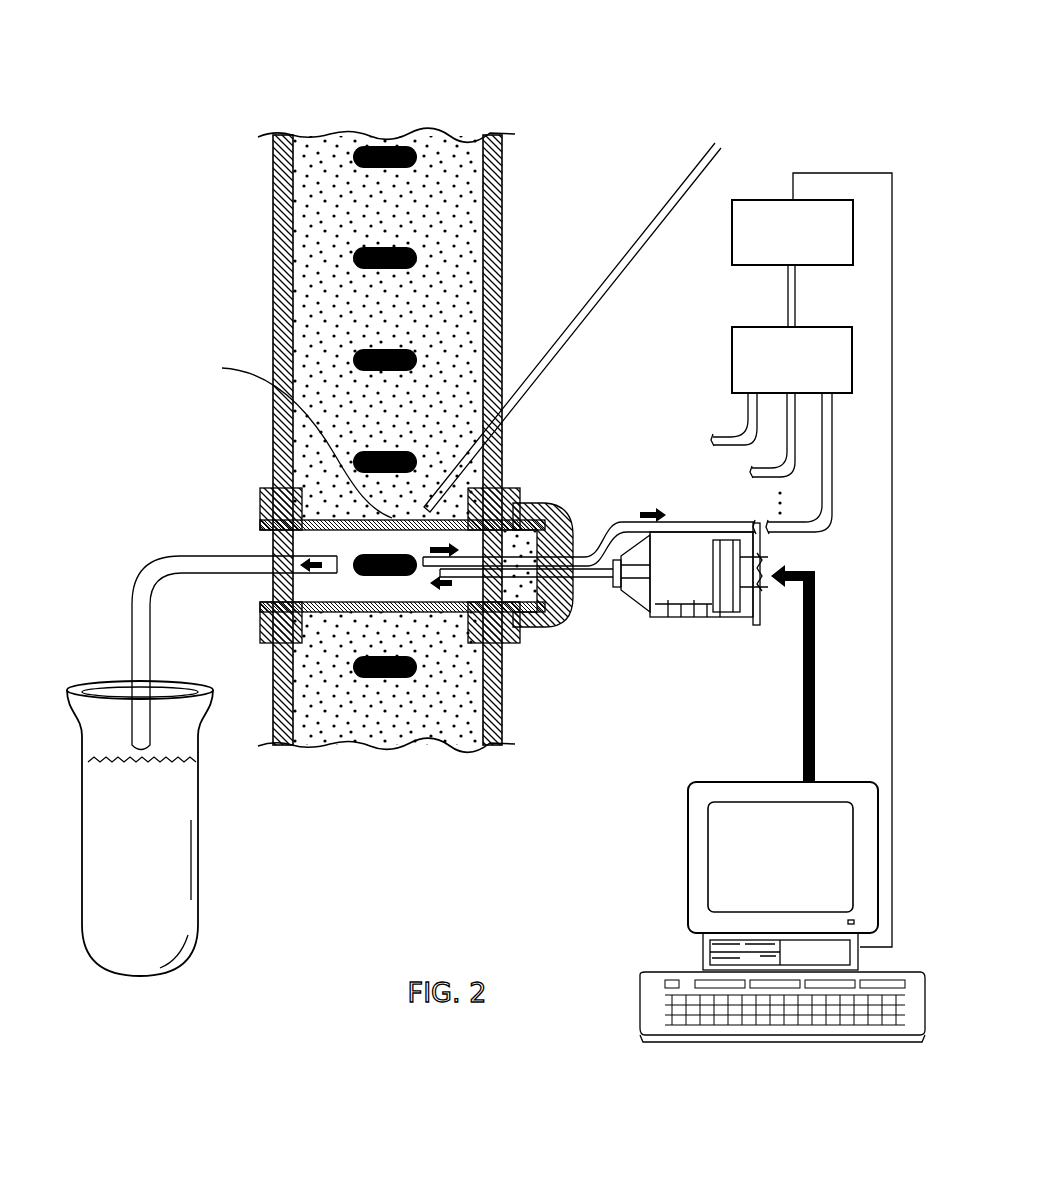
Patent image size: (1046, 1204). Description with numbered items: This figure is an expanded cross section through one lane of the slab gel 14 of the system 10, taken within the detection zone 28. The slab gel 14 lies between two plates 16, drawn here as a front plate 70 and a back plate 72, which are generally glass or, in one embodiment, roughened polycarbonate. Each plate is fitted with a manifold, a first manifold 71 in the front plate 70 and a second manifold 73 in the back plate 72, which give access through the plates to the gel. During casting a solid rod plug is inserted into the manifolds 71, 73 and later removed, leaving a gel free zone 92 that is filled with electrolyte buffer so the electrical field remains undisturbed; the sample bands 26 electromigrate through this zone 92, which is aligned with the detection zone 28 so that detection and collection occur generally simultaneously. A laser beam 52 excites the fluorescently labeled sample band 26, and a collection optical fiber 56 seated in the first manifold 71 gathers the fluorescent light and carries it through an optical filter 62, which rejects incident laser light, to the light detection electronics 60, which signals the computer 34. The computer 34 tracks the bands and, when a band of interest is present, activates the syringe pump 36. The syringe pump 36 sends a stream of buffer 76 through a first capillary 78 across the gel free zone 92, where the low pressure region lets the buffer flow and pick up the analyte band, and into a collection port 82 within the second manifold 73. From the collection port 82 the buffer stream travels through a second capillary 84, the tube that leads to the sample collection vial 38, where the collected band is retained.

The system 10 is at (519, 104).
The slab gel 14 is at (375, 218).
The plates 16 is at (275, 200).
The sample bands 26 is at (405, 440).
The detection zone 28 is at (439, 470).
The computer 34 is at (722, 868).
The syringe pump 36 is at (683, 615).
The collection vial 38 is at (155, 854).
The laser beam 52 is at (294, 441).
The collection optical fiber 56 is at (745, 422).
The light detection electronics 60 is at (740, 243).
The optical filter 62 is at (817, 337).
The front plate 70 is at (500, 378).
The first manifold 71 is at (547, 511).
The back plate 72 is at (275, 317).
The second manifold 73 is at (273, 470).
The stream of buffer 76 is at (444, 584).
The first capillary 78 is at (590, 580).
The collection port 82 is at (320, 575).
The second capillary 84 is at (186, 563).
The gel free zone 92 is at (352, 585).